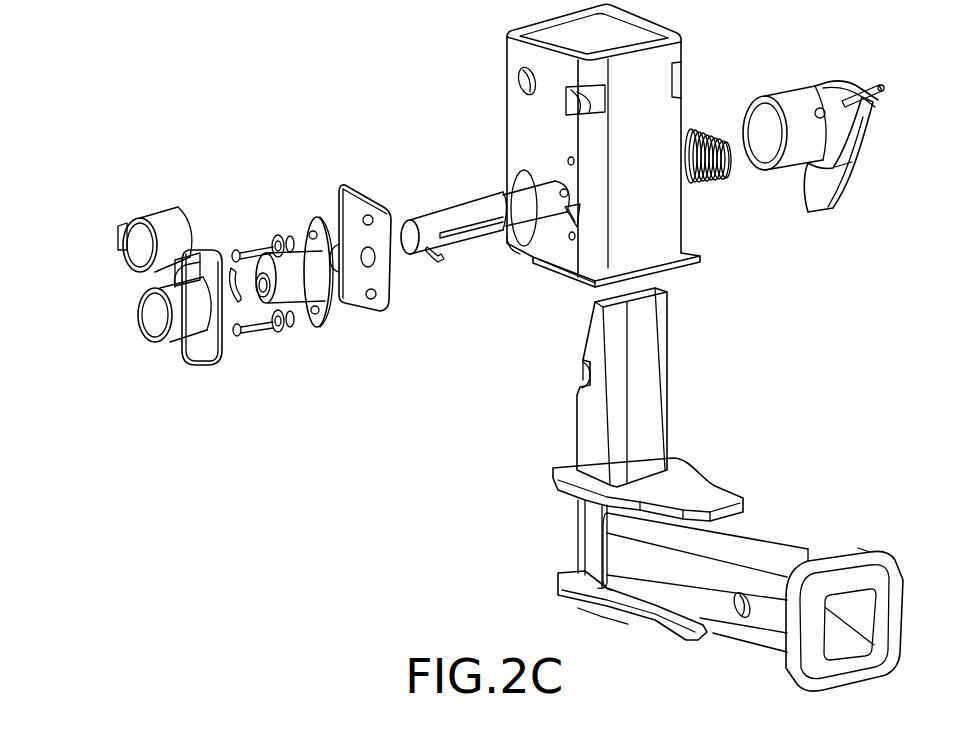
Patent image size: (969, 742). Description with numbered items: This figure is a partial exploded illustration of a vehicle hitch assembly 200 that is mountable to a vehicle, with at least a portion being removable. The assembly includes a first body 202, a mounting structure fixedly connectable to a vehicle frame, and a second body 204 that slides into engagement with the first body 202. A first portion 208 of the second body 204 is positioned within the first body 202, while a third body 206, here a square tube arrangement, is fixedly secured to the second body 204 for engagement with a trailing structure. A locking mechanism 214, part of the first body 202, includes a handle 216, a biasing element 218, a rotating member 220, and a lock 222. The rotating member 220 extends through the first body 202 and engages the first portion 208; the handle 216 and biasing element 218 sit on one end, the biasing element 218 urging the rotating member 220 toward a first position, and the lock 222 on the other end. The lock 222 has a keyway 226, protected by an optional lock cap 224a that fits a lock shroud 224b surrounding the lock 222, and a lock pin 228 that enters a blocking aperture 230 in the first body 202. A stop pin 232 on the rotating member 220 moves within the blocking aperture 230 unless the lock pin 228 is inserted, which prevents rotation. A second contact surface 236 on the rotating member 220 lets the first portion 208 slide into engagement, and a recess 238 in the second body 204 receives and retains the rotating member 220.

The vehicle hitch assembly 200 is at (110, 126).
The first body 202 is at (540, 123).
The second body 204 is at (562, 437).
The third body 206 is at (805, 553).
The first portion 208 is at (642, 351).
The locking mechanism 214 is at (383, 176).
The handle 216 is at (840, 80).
The biasing element 218 is at (698, 128).
The rotating member 220 is at (466, 213).
The lock 222 is at (300, 287).
The lock cap 224a is at (138, 240).
The lock shroud 224b is at (177, 333).
The keyway 226 is at (264, 285).
The lock pin 228 is at (347, 265).
The blocking aperture 230 is at (555, 236).
The stop pin 232 is at (432, 264).
The second contact surface 236 is at (488, 233).
The recess 238 is at (565, 374).